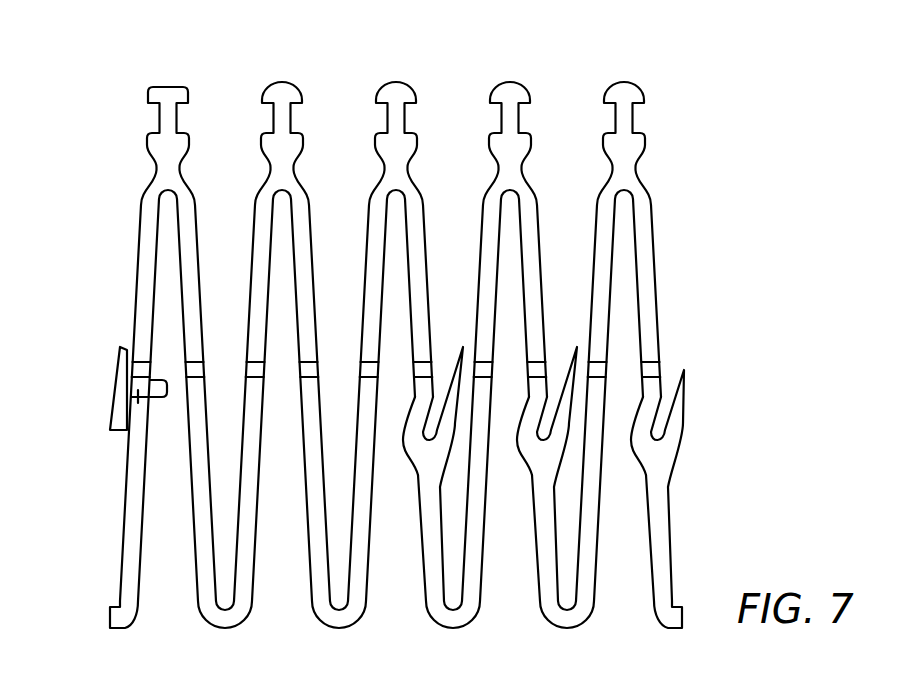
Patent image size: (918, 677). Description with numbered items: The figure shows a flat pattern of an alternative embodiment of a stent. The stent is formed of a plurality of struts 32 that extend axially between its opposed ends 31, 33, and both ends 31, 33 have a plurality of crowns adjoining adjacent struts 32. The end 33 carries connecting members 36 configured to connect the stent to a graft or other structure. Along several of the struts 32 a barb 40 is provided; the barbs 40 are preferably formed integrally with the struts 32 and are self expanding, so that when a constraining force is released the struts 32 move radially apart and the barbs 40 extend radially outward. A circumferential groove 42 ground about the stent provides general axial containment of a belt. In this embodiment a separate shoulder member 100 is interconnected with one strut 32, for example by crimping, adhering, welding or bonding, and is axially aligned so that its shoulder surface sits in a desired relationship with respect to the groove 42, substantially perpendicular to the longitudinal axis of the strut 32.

The end 31 is at (282, 187).
The strut 32 is at (267, 234).
The end 33 is at (340, 618).
The connecting member 36 is at (397, 92).
The barb 40 is at (465, 345).
The circumferential groove 42 is at (137, 364).
The shoulder member 100 is at (128, 428).